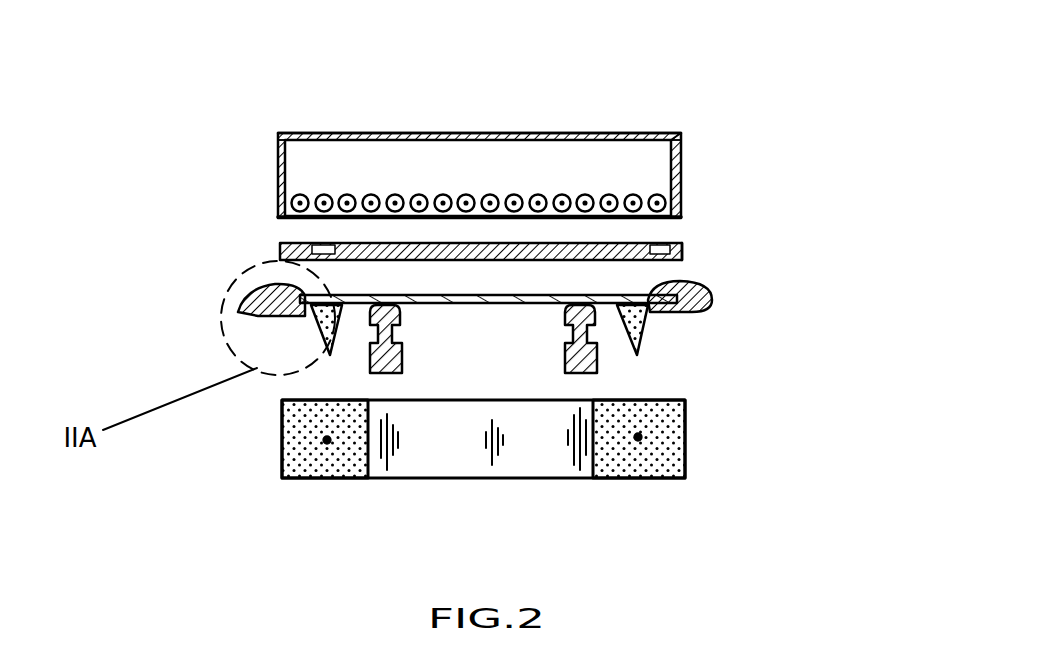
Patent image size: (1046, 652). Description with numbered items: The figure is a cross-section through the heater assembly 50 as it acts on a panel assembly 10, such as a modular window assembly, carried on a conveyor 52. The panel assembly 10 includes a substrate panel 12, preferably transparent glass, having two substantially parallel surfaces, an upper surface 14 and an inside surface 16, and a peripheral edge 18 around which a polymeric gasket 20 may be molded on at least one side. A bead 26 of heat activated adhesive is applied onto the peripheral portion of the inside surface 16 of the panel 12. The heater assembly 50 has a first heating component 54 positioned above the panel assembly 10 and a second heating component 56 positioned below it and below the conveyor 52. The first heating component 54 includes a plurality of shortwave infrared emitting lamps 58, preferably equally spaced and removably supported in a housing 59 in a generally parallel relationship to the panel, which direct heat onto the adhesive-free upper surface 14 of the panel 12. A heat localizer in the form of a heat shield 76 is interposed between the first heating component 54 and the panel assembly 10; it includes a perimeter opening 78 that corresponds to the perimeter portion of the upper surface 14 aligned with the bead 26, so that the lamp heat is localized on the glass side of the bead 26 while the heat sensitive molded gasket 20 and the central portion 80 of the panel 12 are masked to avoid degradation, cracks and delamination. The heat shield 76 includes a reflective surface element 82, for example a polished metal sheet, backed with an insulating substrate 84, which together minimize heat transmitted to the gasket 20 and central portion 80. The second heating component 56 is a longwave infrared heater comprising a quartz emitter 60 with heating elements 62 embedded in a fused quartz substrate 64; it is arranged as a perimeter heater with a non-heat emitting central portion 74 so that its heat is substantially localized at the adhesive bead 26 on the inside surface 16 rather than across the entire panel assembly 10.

The panel assembly 10 is at (712, 278).
The substrate panel 12 is at (540, 294).
The upper surface 14 is at (437, 294).
The inside surface 16 is at (432, 304).
The peripheral edge 18 is at (694, 311).
The polymeric gasket 20 is at (712, 300).
The adhesive bead 26 is at (322, 318).
The heater assembly 50 is at (548, 125).
The conveyor 52 is at (563, 402).
The first heating component 54 is at (684, 129).
The second heating component 56 is at (531, 453).
The shortwave infrared emitting lamps 58 is at (395, 196).
The housing 59 is at (395, 133).
The quartz emitter 60 is at (687, 399).
The heating elements 62 is at (325, 441).
The fused quartz substrate 64 is at (300, 428).
The non-heat emitting central portion 74 is at (488, 424).
The heat shield 76 is at (692, 246).
The perimeter opening 78 is at (290, 241).
The central portion 80 is at (492, 294).
The reflective surface element 82 is at (600, 243).
The insulating substrate 84 is at (278, 254).